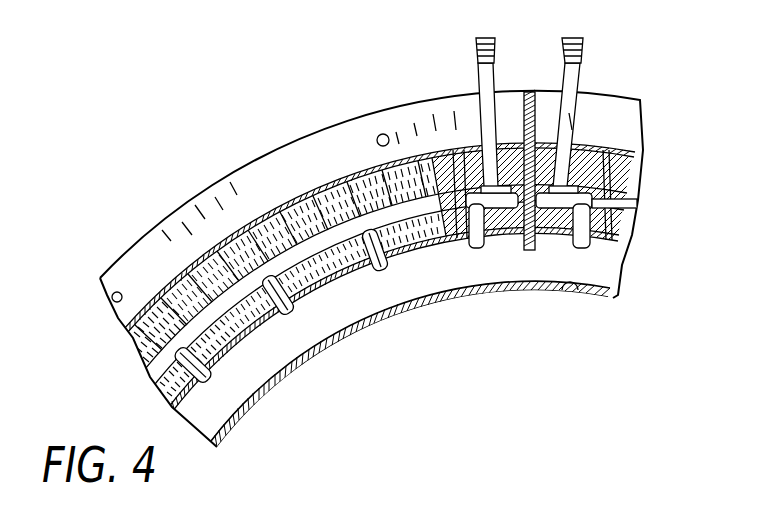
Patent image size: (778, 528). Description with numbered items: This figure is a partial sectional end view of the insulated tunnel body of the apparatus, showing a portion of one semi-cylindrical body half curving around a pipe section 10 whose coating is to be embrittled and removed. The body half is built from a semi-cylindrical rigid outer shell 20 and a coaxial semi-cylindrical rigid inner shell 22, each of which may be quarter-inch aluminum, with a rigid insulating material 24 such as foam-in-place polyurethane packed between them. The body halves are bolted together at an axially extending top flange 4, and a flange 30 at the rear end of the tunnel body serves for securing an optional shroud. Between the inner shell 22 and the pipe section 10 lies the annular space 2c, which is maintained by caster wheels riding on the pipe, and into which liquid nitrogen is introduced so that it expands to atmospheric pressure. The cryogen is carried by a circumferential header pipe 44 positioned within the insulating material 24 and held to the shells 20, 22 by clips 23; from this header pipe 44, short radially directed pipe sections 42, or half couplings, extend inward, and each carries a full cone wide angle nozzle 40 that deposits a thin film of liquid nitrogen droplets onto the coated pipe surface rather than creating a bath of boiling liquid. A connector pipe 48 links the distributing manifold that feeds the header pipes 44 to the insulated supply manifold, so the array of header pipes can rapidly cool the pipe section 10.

The annular space 2c is at (397, 293).
The top flange 4 is at (540, 92).
The pipe section 10 is at (575, 297).
The outer shell 20 is at (170, 283).
The inner shell 22 is at (333, 270).
The clips 23 is at (428, 167).
The insulating material 24 is at (297, 205).
The flange 30 is at (190, 207).
The full cone wide angle nozzles 40 is at (290, 307).
The radially directed pipe section 42 is at (497, 250).
The circumferential header pipe 44 is at (622, 205).
The connector pipe 48 is at (583, 73).